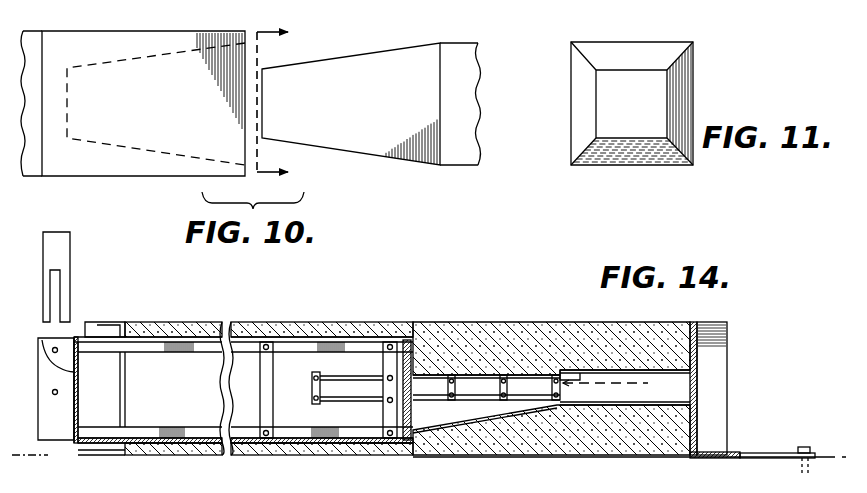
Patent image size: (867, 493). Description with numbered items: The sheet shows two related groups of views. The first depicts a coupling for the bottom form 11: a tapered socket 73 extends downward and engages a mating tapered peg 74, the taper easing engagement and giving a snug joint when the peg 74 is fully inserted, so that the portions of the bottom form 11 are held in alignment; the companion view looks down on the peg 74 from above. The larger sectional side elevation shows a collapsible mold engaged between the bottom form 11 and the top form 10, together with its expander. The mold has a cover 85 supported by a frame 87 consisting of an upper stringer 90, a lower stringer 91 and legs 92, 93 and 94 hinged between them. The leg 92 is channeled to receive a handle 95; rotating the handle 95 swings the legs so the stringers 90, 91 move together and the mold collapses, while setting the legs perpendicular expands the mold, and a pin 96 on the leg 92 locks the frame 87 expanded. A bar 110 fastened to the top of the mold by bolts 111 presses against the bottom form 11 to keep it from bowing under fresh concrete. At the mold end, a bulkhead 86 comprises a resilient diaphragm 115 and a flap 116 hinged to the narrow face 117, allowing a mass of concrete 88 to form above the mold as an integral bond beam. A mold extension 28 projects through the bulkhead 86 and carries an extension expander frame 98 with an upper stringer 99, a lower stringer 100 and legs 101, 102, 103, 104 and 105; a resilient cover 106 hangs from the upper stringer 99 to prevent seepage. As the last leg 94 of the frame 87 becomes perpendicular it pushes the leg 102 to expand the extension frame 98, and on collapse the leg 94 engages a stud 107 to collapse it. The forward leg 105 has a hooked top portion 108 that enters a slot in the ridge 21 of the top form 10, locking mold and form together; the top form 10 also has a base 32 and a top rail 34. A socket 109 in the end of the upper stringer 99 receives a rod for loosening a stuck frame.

In FIG. 10, the socket 73 is at (120, 38).
In FIG. 10, the peg 74 is at (393, 57).
In FIG. 11, the peg 74 is at (656, 48).
In FIG. 10, the bottom form 11 is at (296, 109).
In FIG. 14, the bottom form 11 is at (104, 301).
In FIG. 14, the handle 95 is at (65, 255).
In FIG. 14, the bar 110 is at (97, 321).
In FIG. 14, the bolts 111 is at (90, 344).
In FIG. 14, the leg 92 is at (55, 428).
In FIG. 14, the pin 96 is at (54, 394).
In FIG. 14, the upper stringer 90 is at (172, 346).
In FIG. 14, the lower stringer 91 is at (175, 446).
In FIG. 14, the frame 87 is at (283, 345).
In FIG. 14, the cover 85 is at (337, 337).
In FIG. 14, the leg 94 is at (390, 412).
In FIG. 14, the leg 93 is at (267, 396).
In FIG. 14, the stud 107 is at (360, 400).
In FIG. 14, the bulkhead 86 is at (408, 340).
In FIG. 14, the leg 101 is at (314, 388).
In FIG. 14, the leg 102 is at (390, 392).
In FIG. 14, the diaphragm 115 is at (403, 440).
In FIG. 14, the flap 116 is at (407, 442).
In FIG. 14, the mold extension 28 is at (492, 362).
In FIG. 14, the mass of concrete 88 is at (447, 346).
In FIG. 14, the narrow face 117 is at (437, 347).
In FIG. 14, the leg 103 is at (449, 393).
In FIG. 14, the leg 104 is at (501, 385).
In FIG. 14, the upper stringer 99 is at (557, 380).
In FIG. 14, the extension expander frame 98 is at (467, 426).
In FIG. 14, the lower stringer 100 is at (492, 412).
In FIG. 14, the cover 106 is at (535, 414).
In FIG. 14, the forward leg 105 is at (568, 387).
In FIG. 14, the socket 109 is at (625, 386).
In FIG. 14, the ridge 21 is at (625, 343).
In FIG. 14, the top rail 34 is at (712, 323).
In FIG. 14, the base 32 is at (732, 455).
In FIG. 14, the top form 10 is at (742, 377).
In FIG. 14, the top portion 108 is at (664, 490).